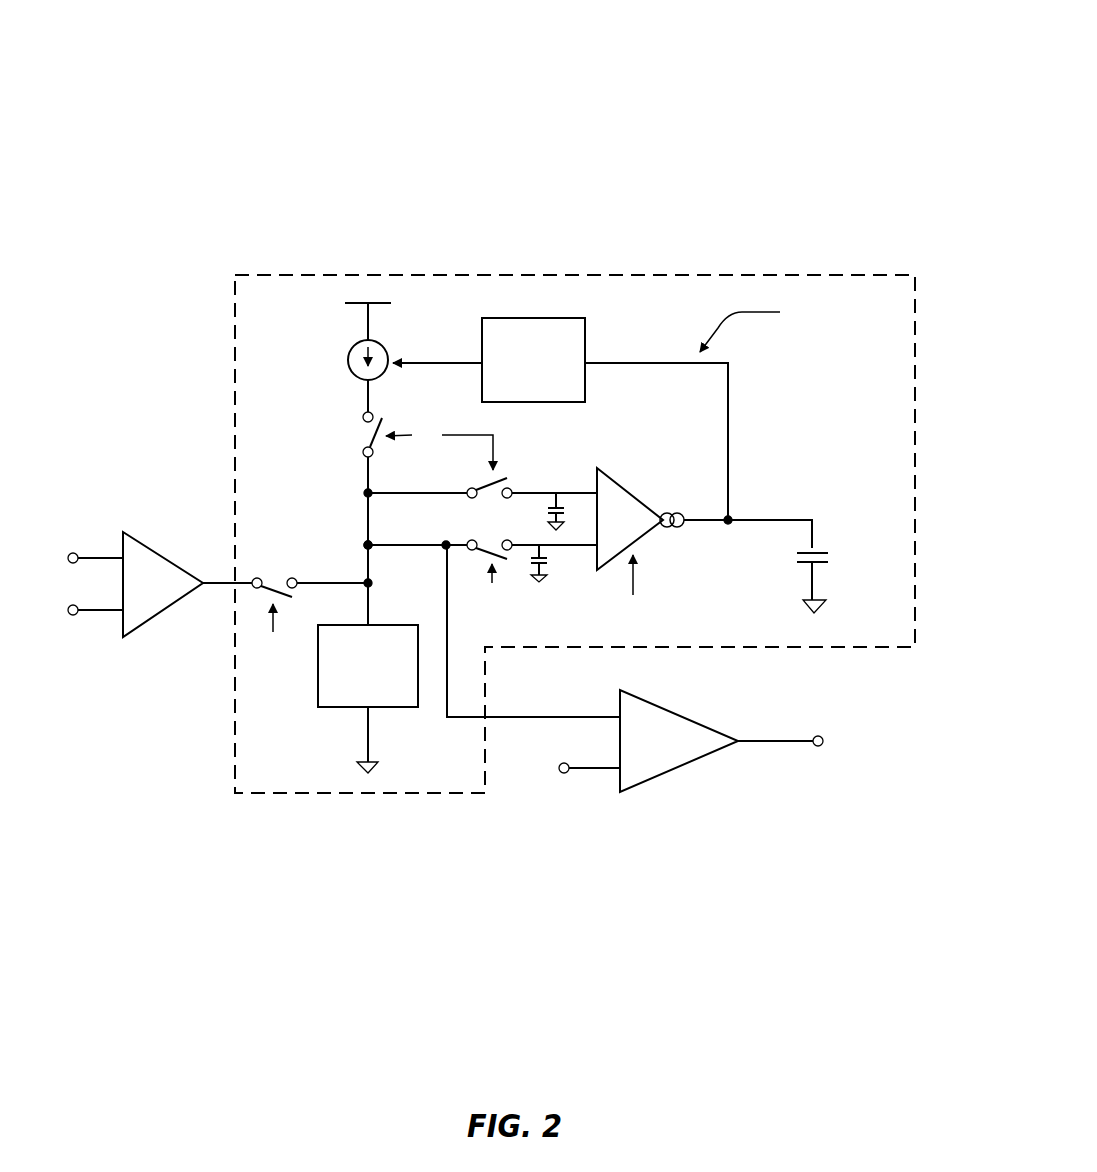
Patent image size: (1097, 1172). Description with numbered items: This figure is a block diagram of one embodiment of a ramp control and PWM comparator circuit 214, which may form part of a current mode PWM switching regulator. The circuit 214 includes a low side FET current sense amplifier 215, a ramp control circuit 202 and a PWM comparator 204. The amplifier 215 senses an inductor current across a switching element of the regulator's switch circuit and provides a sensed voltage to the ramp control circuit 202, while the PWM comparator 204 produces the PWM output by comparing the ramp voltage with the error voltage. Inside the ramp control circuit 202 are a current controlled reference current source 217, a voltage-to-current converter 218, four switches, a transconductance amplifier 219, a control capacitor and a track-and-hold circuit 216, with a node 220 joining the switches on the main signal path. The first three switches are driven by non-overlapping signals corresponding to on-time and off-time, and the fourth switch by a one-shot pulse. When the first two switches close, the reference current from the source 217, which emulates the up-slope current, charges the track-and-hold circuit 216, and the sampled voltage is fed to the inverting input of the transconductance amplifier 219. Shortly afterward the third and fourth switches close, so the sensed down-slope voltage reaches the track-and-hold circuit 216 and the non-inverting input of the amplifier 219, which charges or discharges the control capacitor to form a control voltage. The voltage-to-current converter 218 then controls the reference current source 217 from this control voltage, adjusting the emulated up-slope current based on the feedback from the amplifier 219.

The ramp control and PWM comparator circuit 214 is at (748, 88).
The ramp control circuit 202 is at (462, 795).
The PWM comparator 204 is at (688, 760).
The low side FET current sense amplifier 215 is at (138, 627).
The track-and-hold circuit 216 is at (337, 707).
The current controlled reference current source 217 is at (350, 365).
The voltage-to-current converter 218 is at (586, 402).
The transconductance amplifier 219 is at (658, 530).
The node N220 220 is at (366, 542).